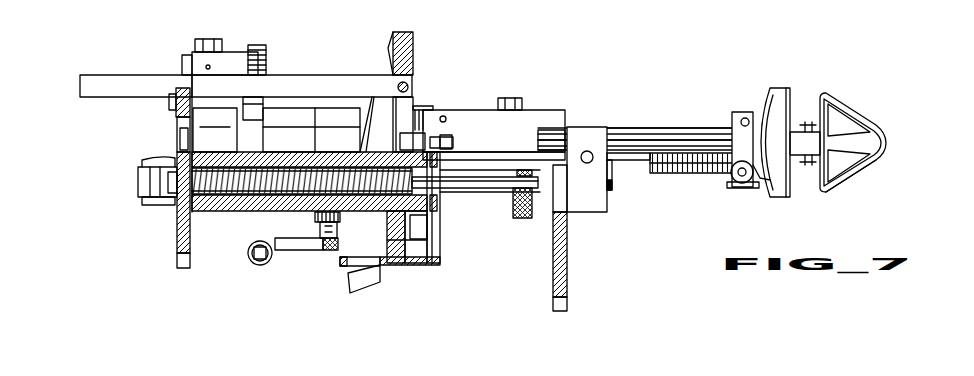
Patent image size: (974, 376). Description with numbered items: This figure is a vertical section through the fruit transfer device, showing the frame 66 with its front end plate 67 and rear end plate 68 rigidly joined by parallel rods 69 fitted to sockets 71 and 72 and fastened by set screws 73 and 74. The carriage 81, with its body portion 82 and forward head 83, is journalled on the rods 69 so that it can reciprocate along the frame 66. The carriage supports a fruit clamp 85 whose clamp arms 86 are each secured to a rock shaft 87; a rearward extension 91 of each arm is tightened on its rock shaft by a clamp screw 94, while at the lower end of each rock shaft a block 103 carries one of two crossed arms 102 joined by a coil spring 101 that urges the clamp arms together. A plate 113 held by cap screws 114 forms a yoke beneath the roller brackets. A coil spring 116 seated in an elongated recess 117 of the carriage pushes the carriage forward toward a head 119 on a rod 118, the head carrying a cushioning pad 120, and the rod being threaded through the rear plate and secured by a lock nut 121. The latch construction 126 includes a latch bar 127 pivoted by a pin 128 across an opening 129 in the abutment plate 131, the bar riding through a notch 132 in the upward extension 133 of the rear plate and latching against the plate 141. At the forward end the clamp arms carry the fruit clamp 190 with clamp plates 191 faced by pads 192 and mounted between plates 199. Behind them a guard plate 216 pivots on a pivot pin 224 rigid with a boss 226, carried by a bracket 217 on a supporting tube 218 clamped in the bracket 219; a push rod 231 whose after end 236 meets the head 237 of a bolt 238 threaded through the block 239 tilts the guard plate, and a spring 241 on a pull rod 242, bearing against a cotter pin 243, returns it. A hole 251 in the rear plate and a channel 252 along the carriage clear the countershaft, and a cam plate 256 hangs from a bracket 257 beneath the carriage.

The frame 66 is at (178, 226).
The front end plate 67 is at (560, 302).
The rear end plate 68 is at (181, 268).
The rods 69 is at (615, 192).
The socket 71 is at (600, 205).
The socket 72 is at (153, 203).
The set screw 73 is at (587, 213).
The set screw 74 is at (168, 154).
The carriage 81 is at (195, 40).
The body portion 82 is at (300, 196).
The forward head 83 is at (437, 227).
The fruit clamp 85 is at (650, 128).
The clamp arms 86 is at (538, 127).
The rock shaft 87 is at (425, 108).
The rearward extension 91 is at (308, 120).
The clamp screw 94 is at (444, 116).
The coil spring 101 is at (270, 265).
The arms 102 is at (318, 251).
The block 103 is at (425, 247).
The plate 113 is at (332, 222).
The cap screws 114 is at (328, 241).
The coil spring 116 is at (246, 190).
The elongated recess 117 is at (245, 151).
The rod 118 is at (468, 188).
The head 119 is at (513, 205).
The pad 120 is at (521, 209).
The lock nut 121 is at (146, 201).
The latch construction 126 is at (88, 70).
The latch bar 127 is at (302, 86).
The pin 128 is at (413, 84).
The opening 129 is at (392, 120).
The abutment plate 131 is at (413, 44).
The notch 132 is at (183, 62).
The upward extension 133 is at (176, 104).
The plate 141 is at (178, 92).
The fruit clamp 190 is at (886, 144).
The clamp plate 191 is at (876, 170).
The pads 192 is at (845, 122).
The plates 199 is at (801, 128).
The guard plates 216 is at (783, 90).
The bracket 217 is at (733, 118).
The supporting tube 218 is at (715, 120).
The bracket 219 is at (590, 127).
The pivot pin 224 is at (748, 182).
The boss 226 is at (760, 179).
The push rod 231 is at (512, 140).
The after end 236 is at (493, 146).
The head 237 is at (445, 143).
The bolt 238 is at (441, 148).
The block 239 is at (416, 140).
The spring 241 is at (715, 163).
The pull rod 242 is at (660, 163).
The cotter pin 243 is at (648, 158).
The hole 251 is at (183, 137).
The channel 252 is at (215, 130).
The cam plate 256 is at (378, 284).
The bracket 257 is at (425, 266).